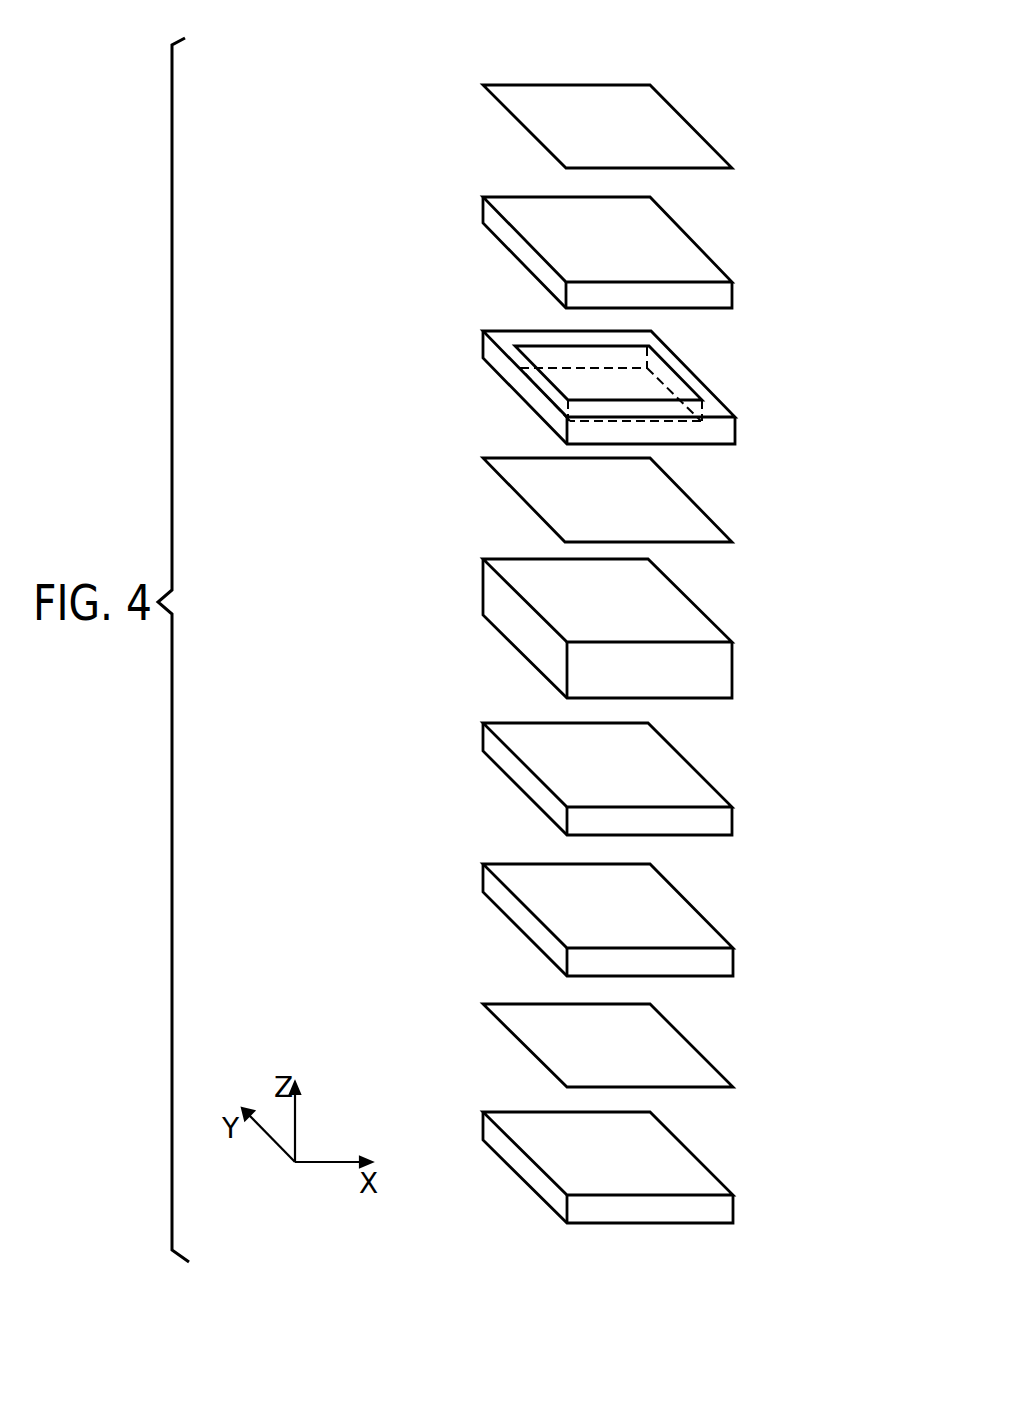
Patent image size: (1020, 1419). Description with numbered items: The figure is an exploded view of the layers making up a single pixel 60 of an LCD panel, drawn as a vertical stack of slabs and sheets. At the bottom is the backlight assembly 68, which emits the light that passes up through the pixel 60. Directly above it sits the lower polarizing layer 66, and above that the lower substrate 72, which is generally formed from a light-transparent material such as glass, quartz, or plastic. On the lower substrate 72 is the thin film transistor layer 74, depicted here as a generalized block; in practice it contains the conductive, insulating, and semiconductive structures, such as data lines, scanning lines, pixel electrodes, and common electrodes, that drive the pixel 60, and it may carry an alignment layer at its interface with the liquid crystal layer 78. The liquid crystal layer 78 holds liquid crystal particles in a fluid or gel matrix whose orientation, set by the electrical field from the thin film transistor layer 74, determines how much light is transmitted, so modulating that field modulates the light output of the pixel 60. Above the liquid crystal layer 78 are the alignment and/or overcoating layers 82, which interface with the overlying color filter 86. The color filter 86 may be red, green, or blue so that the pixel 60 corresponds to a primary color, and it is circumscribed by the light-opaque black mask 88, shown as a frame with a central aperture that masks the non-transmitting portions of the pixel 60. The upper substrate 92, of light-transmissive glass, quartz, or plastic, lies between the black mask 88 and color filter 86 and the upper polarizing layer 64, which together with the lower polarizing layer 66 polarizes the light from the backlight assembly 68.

The pixel 60 is at (497, 63).
The upper polarizing layer 64 is at (693, 128).
The upper substrate 92 is at (732, 294).
The black mask 88 is at (734, 430).
The color filter 86 is at (642, 383).
The alignment and/or overcoating layers 82 is at (692, 499).
The liquid crystal layer 78 is at (733, 672).
The thin film transistor layer 74 is at (733, 822).
The lower substrate 72 is at (735, 962).
The lower polarizing layer 66 is at (692, 1043).
The backlight assembly 68 is at (735, 1209).